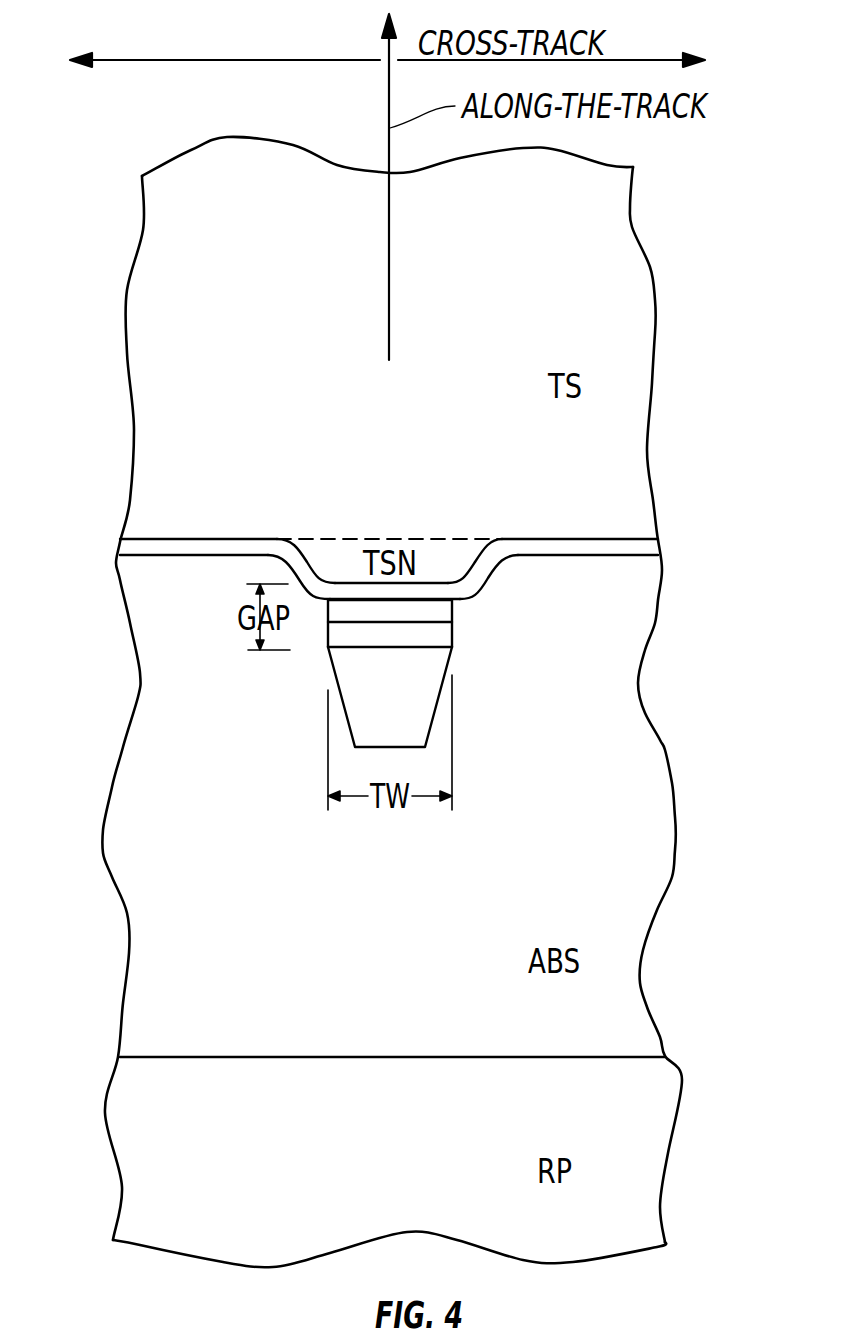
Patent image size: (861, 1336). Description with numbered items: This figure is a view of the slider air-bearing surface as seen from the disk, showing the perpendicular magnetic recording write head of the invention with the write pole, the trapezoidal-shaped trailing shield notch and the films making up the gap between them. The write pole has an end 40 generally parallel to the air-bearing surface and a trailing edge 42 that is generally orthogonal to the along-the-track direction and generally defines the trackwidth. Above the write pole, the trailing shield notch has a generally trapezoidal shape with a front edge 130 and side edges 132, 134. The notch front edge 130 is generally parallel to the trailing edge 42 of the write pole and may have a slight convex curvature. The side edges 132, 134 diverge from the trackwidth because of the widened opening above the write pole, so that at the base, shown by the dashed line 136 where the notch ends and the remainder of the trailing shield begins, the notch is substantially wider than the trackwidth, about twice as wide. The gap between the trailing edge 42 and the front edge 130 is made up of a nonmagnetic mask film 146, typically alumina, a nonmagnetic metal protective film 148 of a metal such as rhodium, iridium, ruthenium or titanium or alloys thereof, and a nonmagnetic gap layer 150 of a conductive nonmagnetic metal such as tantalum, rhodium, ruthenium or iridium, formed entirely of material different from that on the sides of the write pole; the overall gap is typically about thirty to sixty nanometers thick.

The end of the write pole 40 is at (383, 708).
The trailing edge of the write pole 42 is at (353, 650).
The TSN front edge 130 is at (397, 523).
The TSN side edge 132 is at (303, 565).
The TSN side edge 134 is at (474, 561).
The base of the TSN 136 is at (355, 537).
The nonmagnetic mask film 146 is at (450, 643).
The nonmagnetic metal protective film 148 is at (452, 612).
The nonmagnetic gap layer 150 is at (623, 543).